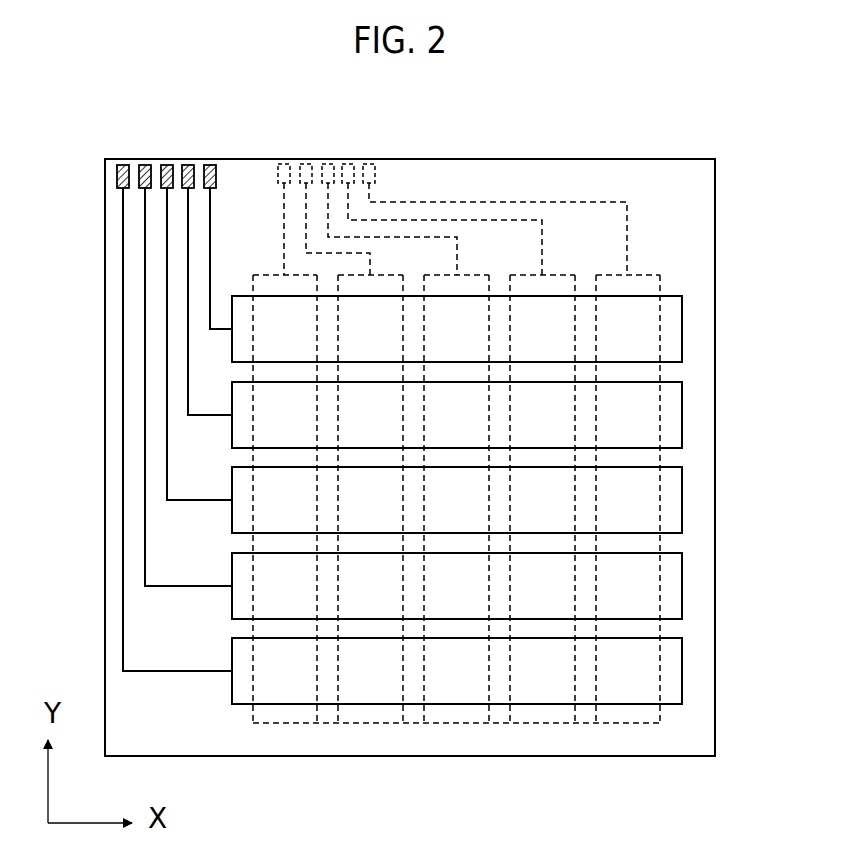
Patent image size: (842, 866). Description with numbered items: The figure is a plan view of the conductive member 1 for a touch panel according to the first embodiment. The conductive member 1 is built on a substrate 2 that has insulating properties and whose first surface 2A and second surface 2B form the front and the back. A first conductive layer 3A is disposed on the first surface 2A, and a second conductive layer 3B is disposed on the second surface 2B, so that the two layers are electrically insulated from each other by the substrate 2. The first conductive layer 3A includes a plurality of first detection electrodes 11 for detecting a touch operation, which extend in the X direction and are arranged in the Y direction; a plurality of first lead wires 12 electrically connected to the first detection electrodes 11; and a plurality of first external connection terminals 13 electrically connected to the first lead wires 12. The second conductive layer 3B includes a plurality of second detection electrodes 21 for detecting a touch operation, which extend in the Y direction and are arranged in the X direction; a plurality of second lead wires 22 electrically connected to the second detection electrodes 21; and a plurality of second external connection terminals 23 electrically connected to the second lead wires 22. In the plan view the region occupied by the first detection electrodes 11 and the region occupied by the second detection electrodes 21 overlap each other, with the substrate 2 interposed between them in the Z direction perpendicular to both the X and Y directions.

The conductive member for a touch panel 1 is at (727, 130).
The substrate 2 is at (502, 500).
The first surface 2A is at (695, 485).
The second surface 2B is at (695, 562).
The first detection electrodes 11 is at (668, 678).
The first lead wires 12 is at (122, 631).
The first external connection terminals 13 is at (123, 165).
The second detection electrodes 21 is at (626, 723).
The second lead wires 22 is at (528, 183).
The second external connection terminals 23 is at (368, 164).
The first conductive layer 3A is at (692, 297).
The second conductive layer 3B is at (650, 251).